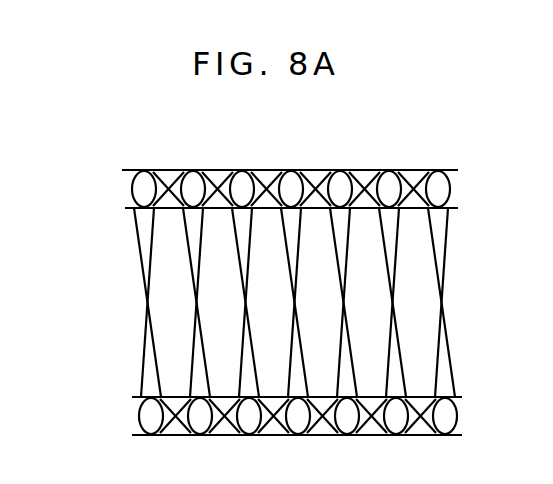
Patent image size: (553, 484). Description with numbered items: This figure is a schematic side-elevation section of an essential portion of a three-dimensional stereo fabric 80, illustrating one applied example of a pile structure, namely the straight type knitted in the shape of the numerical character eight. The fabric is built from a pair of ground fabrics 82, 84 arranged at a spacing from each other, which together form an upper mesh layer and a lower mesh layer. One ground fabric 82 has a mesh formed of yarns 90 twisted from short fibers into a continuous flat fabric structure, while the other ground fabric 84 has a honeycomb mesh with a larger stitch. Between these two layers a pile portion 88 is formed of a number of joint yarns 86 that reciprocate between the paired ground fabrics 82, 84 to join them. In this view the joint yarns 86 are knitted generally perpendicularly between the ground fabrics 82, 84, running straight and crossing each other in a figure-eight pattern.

The three-dimensional stereo fabric 80 is at (388, 135).
The ground fabric 82 is at (420, 167).
The ground fabric 84 is at (372, 437).
The joint yarns 86 is at (138, 248).
The pile portion 88 is at (448, 263).
The yarns 90 is at (143, 171).